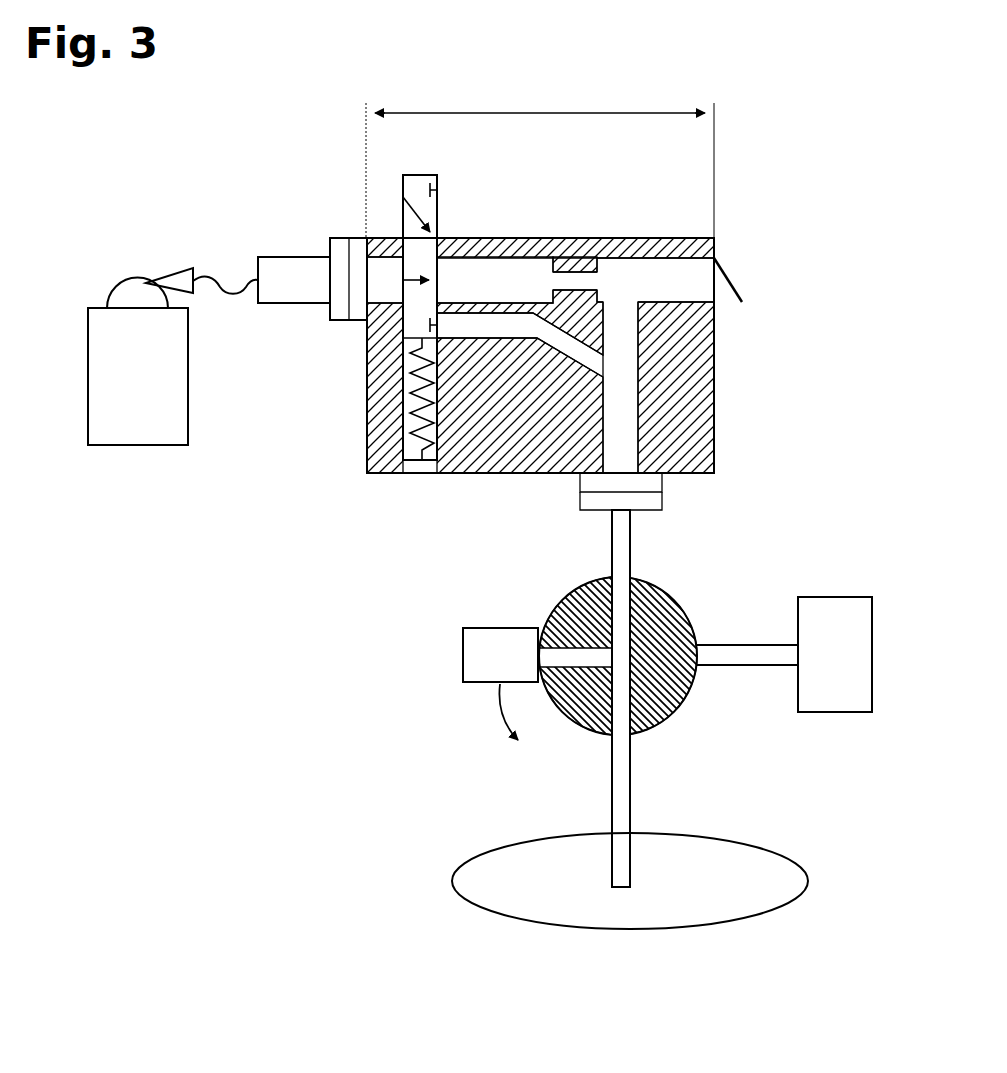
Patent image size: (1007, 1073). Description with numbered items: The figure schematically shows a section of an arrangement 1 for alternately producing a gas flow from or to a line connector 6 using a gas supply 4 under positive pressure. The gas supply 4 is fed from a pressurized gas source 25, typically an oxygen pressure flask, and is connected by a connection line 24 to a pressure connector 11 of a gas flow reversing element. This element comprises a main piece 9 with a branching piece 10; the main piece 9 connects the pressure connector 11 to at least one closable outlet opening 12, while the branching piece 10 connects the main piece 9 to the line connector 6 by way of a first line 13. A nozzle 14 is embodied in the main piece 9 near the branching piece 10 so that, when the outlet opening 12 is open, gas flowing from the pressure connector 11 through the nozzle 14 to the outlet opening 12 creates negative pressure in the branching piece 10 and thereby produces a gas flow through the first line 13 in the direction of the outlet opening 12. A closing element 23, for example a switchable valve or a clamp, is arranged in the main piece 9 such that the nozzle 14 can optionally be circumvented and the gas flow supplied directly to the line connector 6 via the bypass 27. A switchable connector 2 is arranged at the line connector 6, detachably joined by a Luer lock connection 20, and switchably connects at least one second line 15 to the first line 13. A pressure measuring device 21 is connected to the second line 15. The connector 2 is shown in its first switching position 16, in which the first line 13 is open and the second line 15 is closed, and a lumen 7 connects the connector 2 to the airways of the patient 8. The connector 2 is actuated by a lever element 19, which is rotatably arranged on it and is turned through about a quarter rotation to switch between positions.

The arrangement 1 is at (290, 182).
The switchable connector 2 is at (572, 588).
The gas supply 4 is at (128, 338).
The line connector 6 is at (598, 479).
The lumen 7 is at (618, 812).
The patient 8 is at (715, 877).
The main piece 9 is at (505, 280).
The branching piece 10 is at (627, 423).
The pressure connector 11 is at (352, 240).
The outlet opening 12 is at (714, 300).
The first line 13 is at (627, 403).
The nozzle 14 is at (598, 280).
The second line 15 is at (723, 650).
The first switching position 16 is at (463, 705).
The lever element 19 is at (480, 662).
The Luer lock connection 20 is at (653, 483).
The pressure measuring device 21 is at (830, 627).
The closing element 23 is at (413, 302).
The connection line 24 is at (237, 288).
The pressurized gas source 25 is at (168, 422).
The bypass 27 is at (488, 328).